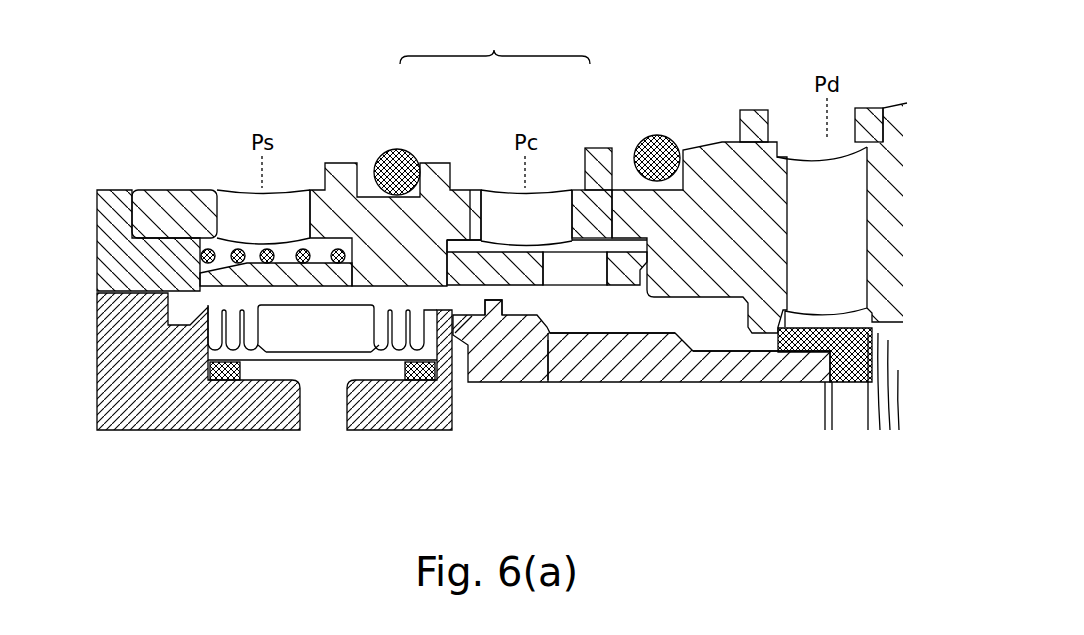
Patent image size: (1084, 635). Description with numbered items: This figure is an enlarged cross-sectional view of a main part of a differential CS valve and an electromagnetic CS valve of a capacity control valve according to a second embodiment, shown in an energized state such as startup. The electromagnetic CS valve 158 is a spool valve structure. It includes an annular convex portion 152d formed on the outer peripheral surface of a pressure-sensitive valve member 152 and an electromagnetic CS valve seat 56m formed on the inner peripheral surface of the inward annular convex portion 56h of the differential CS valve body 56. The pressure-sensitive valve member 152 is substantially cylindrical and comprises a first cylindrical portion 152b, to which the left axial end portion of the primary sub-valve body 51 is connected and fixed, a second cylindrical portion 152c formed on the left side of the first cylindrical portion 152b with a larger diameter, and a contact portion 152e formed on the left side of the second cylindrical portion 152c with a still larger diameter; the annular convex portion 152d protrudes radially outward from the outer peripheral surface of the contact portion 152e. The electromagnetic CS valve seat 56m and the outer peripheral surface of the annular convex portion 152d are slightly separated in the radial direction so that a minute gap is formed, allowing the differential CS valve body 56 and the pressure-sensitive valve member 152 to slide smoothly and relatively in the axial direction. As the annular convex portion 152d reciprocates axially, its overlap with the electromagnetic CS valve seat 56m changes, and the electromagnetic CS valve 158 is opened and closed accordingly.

The electromagnetic CS valve 158 is at (495, 44).
The electromagnetic CS valve seat 56m is at (481, 302).
The annular convex portion 152d is at (492, 300).
The pressure-sensitive valve member 152 is at (631, 280).
The differential CS valve body 56 is at (608, 236).
The primary sub-valve body 51 is at (830, 320).
The contact portion 152e is at (466, 318).
The inward annular convex portion 56h is at (538, 332).
The second cylindrical portion 152c is at (634, 338).
The first cylindrical portion 152b is at (760, 384).